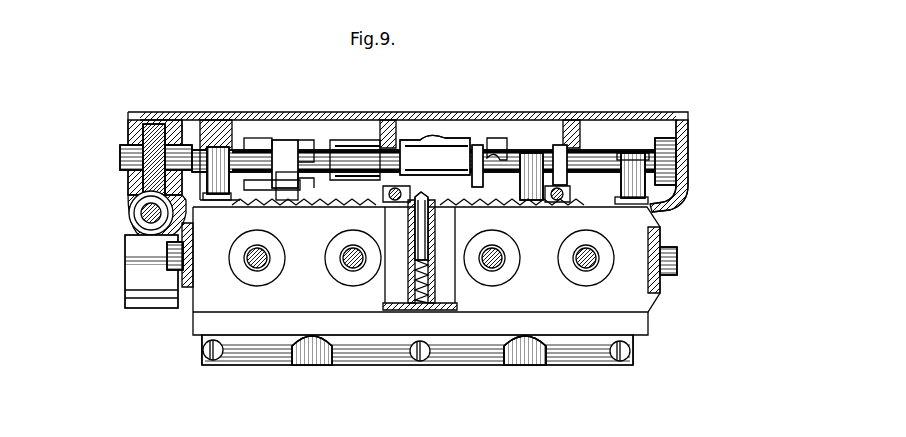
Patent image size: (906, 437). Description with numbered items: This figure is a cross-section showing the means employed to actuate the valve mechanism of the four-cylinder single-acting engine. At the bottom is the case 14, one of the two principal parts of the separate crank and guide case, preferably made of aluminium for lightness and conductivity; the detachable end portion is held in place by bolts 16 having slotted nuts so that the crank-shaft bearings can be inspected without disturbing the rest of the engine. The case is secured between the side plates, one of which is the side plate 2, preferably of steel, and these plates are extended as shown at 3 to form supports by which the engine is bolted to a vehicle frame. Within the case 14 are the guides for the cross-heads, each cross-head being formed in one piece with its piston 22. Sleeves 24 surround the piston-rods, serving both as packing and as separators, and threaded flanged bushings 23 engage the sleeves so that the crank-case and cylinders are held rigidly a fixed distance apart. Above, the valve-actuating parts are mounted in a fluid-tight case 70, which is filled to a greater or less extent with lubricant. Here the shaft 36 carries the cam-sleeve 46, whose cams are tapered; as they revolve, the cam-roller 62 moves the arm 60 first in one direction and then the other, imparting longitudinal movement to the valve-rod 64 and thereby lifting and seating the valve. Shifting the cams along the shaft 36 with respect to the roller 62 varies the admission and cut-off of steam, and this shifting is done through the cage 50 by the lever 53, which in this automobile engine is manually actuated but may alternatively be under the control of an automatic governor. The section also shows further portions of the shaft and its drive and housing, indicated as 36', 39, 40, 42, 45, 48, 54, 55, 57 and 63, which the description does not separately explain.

The side plate 2 is at (190, 292).
The extension 3 is at (661, 288).
The case 14 is at (476, 352).
The bolts 16 is at (418, 360).
The piston 22 is at (270, 258).
The flanged bushing 23 is at (262, 274).
The sleeve 24 is at (268, 247).
The shaft 36 is at (130, 157).
The shaft boss 36' is at (421, 366).
The shaft 39 is at (148, 214).
The gear 40 is at (130, 208).
The worm gear 42 is at (154, 124).
The nut 45 is at (125, 262).
The cam-sleeve 46 is at (427, 129).
The cam 48 is at (513, 145).
The cage 50 is at (390, 128).
The lever 53 is at (368, 206).
The valve stem 54 is at (430, 195).
The valve 55 is at (430, 228).
The housing 57 is at (128, 140).
The arm 60 is at (240, 150).
The cam-roller 62 is at (290, 145).
The lever 63 is at (286, 182).
The valve-rod 64 is at (302, 198).
The fluid-tight case 70 is at (684, 118).